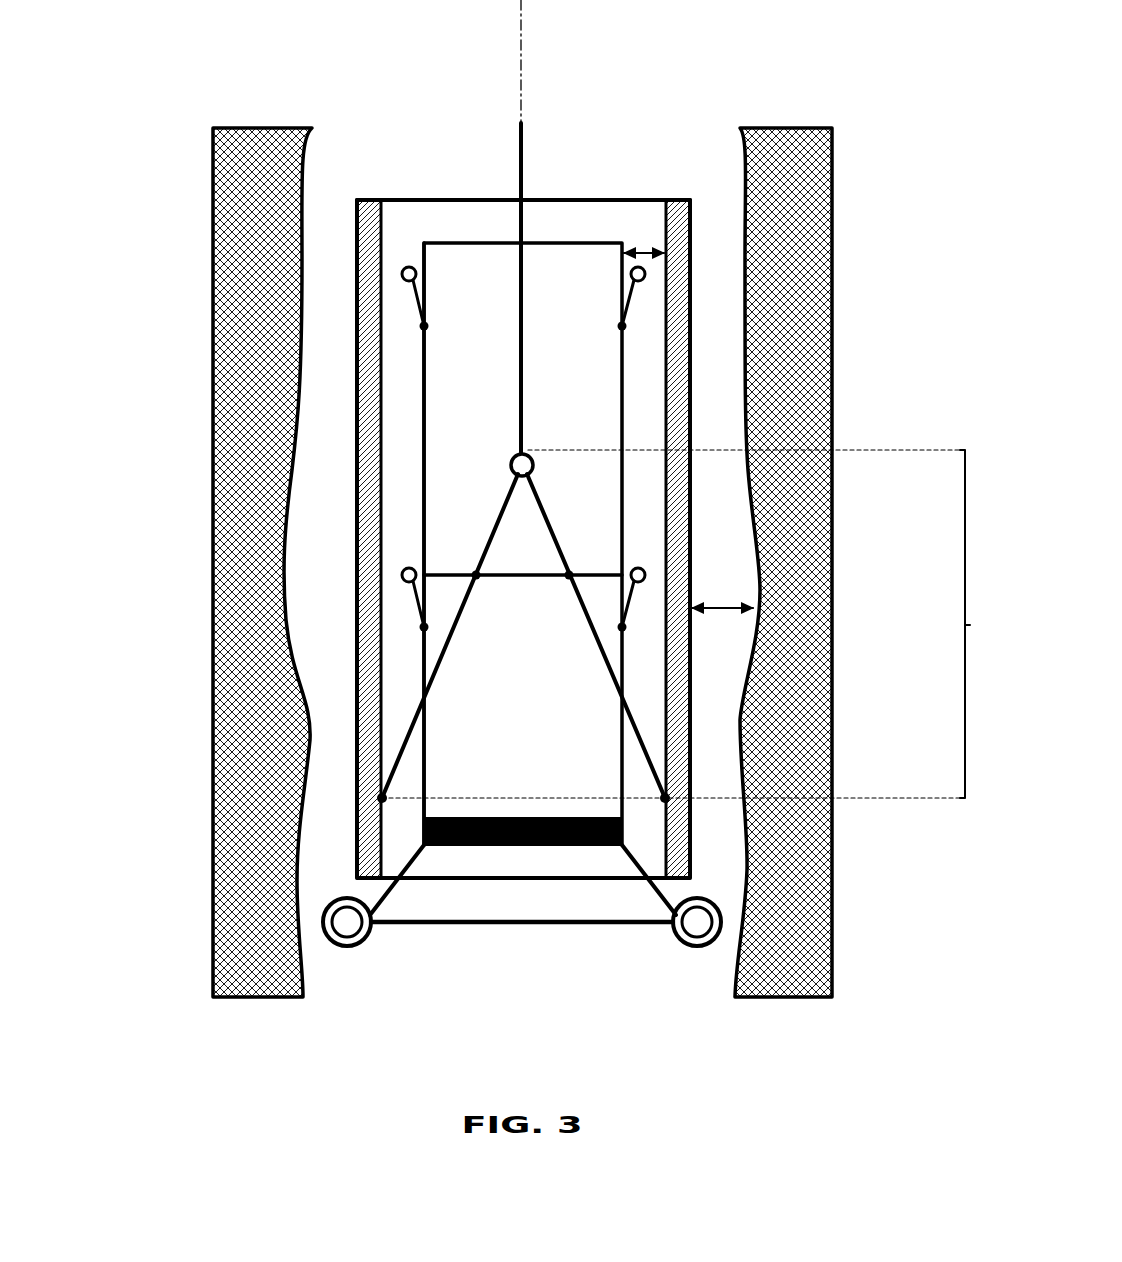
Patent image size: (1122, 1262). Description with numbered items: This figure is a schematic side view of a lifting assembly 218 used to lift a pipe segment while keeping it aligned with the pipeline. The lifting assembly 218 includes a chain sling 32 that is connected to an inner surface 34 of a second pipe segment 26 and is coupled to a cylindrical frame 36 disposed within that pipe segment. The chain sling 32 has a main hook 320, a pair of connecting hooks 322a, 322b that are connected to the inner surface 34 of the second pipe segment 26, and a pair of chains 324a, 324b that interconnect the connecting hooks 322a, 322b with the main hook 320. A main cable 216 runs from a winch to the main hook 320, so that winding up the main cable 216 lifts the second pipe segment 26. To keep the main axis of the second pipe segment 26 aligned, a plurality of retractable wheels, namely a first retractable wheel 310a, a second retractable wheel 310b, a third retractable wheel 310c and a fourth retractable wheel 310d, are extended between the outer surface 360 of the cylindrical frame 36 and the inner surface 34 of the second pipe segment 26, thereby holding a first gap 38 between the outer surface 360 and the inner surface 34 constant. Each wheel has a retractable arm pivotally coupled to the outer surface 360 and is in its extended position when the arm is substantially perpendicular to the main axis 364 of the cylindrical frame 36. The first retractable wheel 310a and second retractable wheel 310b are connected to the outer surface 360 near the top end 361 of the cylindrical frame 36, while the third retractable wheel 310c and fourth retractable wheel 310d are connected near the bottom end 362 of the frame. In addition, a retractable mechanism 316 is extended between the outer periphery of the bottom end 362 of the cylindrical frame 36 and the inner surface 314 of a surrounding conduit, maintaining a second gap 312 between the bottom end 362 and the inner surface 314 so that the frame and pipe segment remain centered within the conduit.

The lifting assembly 218 is at (570, 523).
The inner surface of conduit 314 is at (736, 165).
The second pipe segment 26 is at (390, 475).
The inner surface of second pipe segment 34 is at (662, 237).
The cylindrical frame 36 is at (373, 459).
The outer surface of cylindrical frame 360 is at (418, 394).
The first gap 38 is at (630, 250).
The top end of cylindrical frame 361 is at (553, 192).
The main axis of cylindrical frame 364 is at (521, 40).
The main cable 216 is at (521, 147).
The main hook 320 is at (510, 466).
The chain 324a is at (438, 670).
The chain 324b is at (596, 638).
The connecting hook 322a is at (386, 795).
The connecting hook 322b is at (660, 794).
The first retractable wheel 310a is at (405, 267).
The second retractable wheel 310b is at (645, 271).
The third retractable wheel 310c is at (402, 572).
The fourth retractable wheel 310d is at (633, 568).
The bottom end of cylindrical frame 362 is at (542, 852).
The retractable mechanism 316 is at (345, 965).
The second gap 312 is at (718, 606).
The chain sling 32 is at (697, 624).